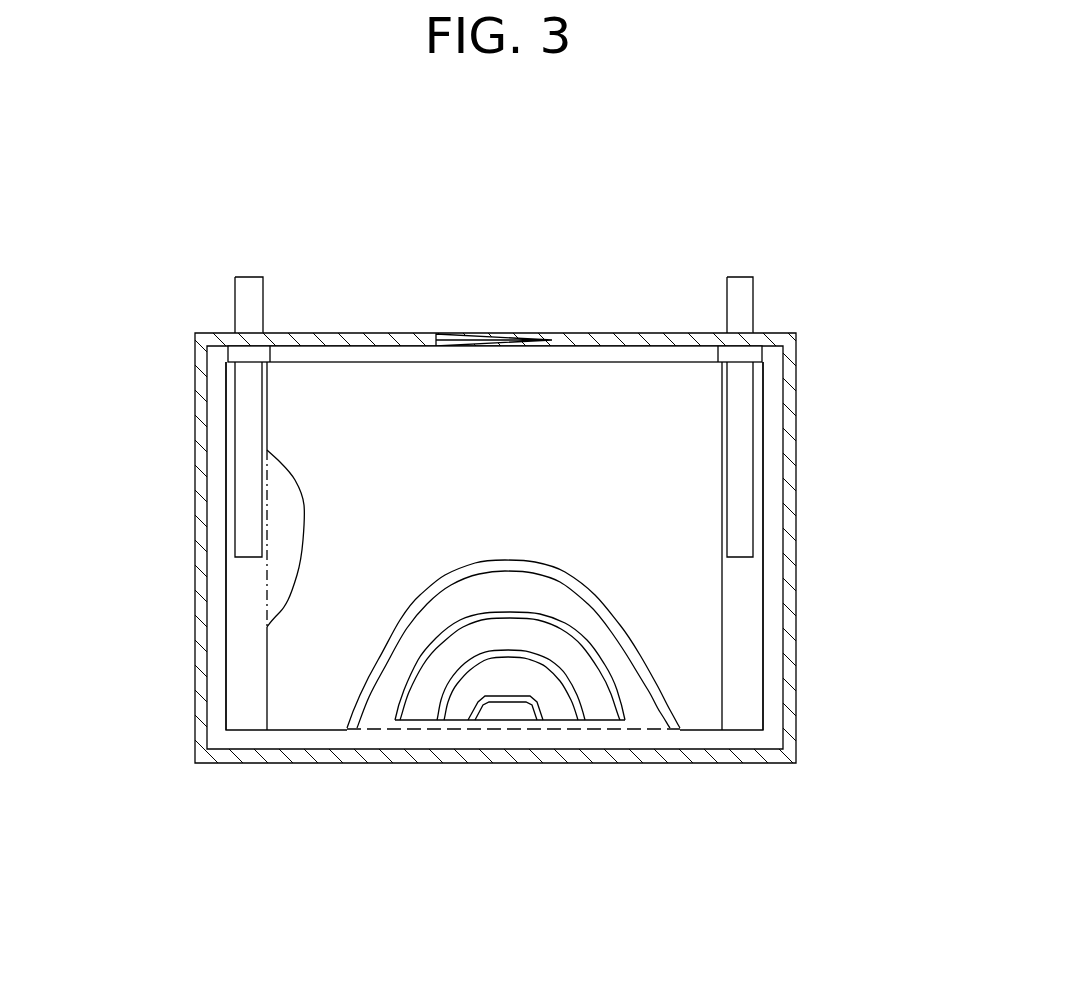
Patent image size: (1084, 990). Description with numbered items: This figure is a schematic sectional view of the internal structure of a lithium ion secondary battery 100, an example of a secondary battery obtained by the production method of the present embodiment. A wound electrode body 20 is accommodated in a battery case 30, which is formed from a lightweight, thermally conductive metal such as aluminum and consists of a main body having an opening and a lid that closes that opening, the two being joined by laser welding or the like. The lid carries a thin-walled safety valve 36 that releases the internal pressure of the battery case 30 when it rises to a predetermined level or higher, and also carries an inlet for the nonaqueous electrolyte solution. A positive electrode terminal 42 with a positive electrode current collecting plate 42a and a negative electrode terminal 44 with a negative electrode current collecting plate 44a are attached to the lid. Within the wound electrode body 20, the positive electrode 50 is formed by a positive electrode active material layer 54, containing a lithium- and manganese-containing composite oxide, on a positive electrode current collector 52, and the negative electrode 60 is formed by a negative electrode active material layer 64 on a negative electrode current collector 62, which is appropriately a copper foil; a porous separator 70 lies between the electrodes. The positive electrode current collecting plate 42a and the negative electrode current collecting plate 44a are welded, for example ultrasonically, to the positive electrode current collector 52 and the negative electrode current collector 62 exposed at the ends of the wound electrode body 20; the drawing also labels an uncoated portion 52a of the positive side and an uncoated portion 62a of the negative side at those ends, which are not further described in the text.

The lithium ion secondary battery 100 is at (542, 542).
The wound electrode body 20 is at (494, 574).
The battery case 30 is at (797, 453).
The safety valve 36 is at (497, 333).
The positive electrode terminal 42 is at (243, 284).
The positive electrode current collecting plate 42a is at (248, 437).
The negative electrode terminal 44 is at (740, 284).
The negative electrode current collecting plate 44a is at (740, 398).
The positive electrode 50 is at (385, 627).
The positive electrode current collector 52 is at (183, 551).
The positive electrode uncoated portion 52a is at (243, 702).
The positive electrode active material layer 54 is at (290, 507).
The negative electrode 60 is at (660, 627).
The negative electrode current collector 62 is at (805, 546).
The negative electrode uncoated portion 62a is at (748, 620).
The negative electrode active material layer 64 is at (457, 708).
The separator 70 is at (307, 655).